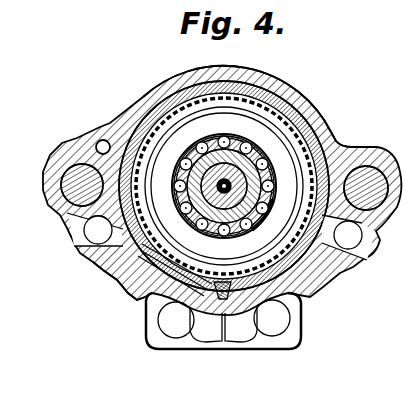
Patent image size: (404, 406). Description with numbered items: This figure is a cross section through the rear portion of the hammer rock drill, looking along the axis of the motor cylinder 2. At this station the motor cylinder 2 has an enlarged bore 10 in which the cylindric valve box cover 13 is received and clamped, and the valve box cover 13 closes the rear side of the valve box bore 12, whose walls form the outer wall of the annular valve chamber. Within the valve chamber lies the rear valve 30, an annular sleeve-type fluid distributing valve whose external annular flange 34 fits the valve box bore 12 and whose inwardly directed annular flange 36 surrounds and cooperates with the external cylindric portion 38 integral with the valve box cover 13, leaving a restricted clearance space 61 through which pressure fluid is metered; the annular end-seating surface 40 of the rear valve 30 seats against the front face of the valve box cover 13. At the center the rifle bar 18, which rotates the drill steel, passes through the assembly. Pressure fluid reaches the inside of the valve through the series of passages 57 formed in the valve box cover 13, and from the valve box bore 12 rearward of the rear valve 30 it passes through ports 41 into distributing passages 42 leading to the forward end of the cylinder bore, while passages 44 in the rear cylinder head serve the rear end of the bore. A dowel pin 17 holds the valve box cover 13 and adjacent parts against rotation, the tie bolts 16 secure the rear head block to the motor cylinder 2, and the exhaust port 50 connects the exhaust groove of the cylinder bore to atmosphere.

The motor cylinder 2 is at (252, 79).
The enlarged bore 10 is at (152, 103).
The valve box bore 12 is at (193, 98).
The valve box cover 13 is at (242, 140).
The tie bolts 16 is at (72, 174).
The dowel pin 17 is at (222, 292).
The rifle bar 18 is at (202, 179).
The rear valve 30 is at (262, 118).
The external annular flange 34 is at (172, 106).
The inwardly directed annular flange 36 is at (272, 318).
The external cylindric portion 38 is at (150, 301).
The annular end-seating surface 40 is at (133, 293).
The ports 41 is at (112, 238).
The distributing passages 42 is at (95, 243).
The passages 44 is at (333, 131).
The exhaust port 50 is at (243, 332).
The passages 57 is at (291, 129).
The restricted clearance space 61 is at (176, 320).